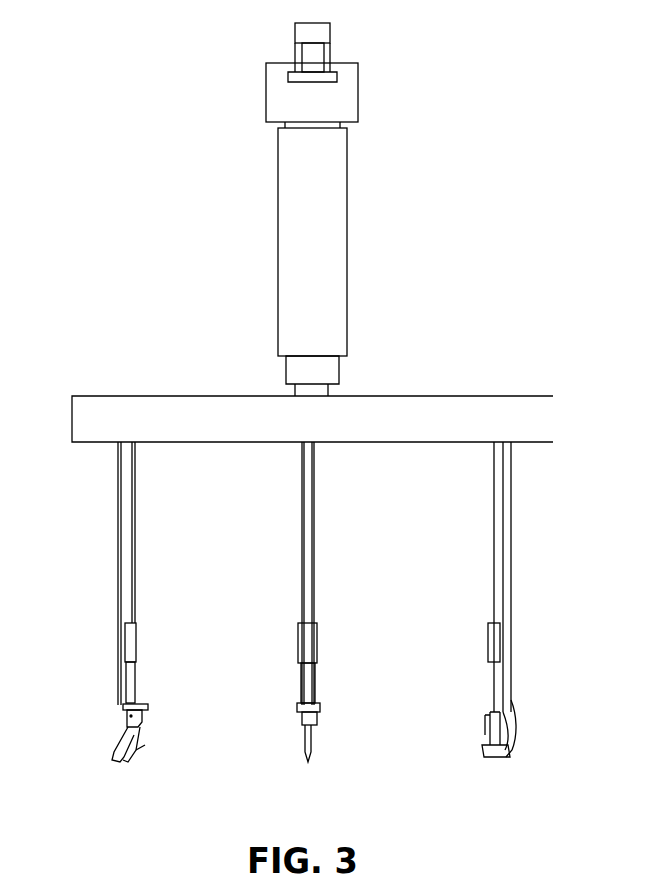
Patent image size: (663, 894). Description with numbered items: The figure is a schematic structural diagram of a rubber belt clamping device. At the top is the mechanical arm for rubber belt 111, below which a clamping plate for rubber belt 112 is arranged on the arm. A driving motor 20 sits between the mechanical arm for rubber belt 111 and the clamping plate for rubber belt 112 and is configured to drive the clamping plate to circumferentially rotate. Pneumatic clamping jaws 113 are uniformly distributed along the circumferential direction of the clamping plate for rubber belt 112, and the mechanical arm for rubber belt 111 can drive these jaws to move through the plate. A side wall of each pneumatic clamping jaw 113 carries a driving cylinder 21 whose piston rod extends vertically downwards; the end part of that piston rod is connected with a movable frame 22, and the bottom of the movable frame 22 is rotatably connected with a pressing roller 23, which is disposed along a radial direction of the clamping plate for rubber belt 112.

The mechanical arm for rubber belt 111 is at (297, 247).
The driving motor 20 is at (311, 369).
The clamping plate for rubber belt 112 is at (233, 420).
The driving cylinder 21 is at (126, 640).
The movable frame 22 is at (123, 672).
The pressing roller 23 is at (118, 698).
The pneumatic clamping jaw 113 is at (115, 742).